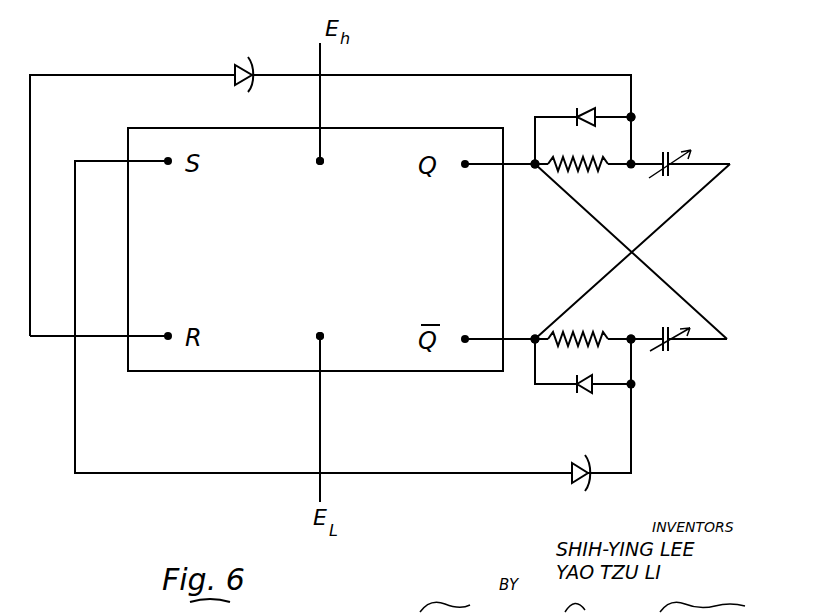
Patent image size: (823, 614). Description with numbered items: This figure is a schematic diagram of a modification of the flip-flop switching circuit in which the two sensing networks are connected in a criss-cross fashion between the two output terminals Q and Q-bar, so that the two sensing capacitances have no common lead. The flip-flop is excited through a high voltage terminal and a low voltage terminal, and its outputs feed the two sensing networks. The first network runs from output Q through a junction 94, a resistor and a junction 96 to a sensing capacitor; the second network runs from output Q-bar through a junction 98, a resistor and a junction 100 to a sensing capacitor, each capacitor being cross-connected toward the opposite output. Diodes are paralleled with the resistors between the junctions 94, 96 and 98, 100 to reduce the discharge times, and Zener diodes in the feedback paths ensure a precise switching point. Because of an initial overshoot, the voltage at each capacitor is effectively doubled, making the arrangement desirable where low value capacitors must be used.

The junction 94 is at (533, 174).
The junction 96 is at (637, 158).
The junction 98 is at (533, 330).
The junction 100 is at (641, 318).